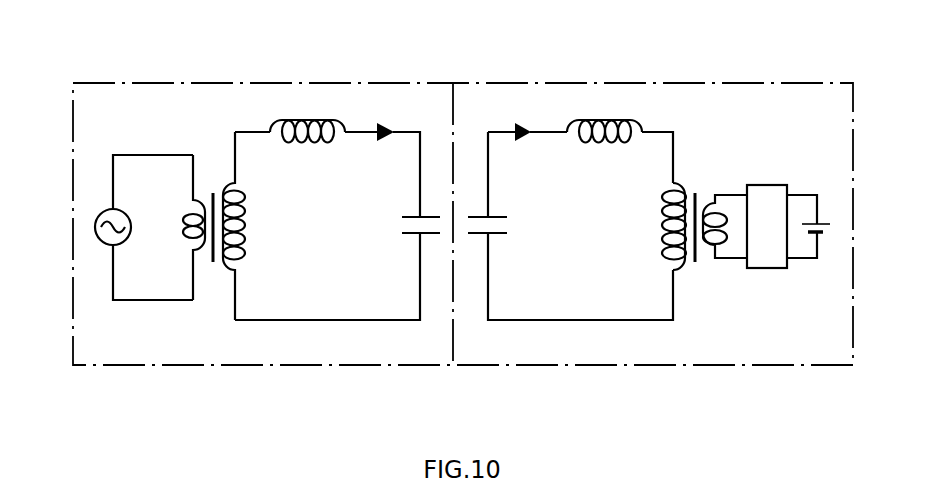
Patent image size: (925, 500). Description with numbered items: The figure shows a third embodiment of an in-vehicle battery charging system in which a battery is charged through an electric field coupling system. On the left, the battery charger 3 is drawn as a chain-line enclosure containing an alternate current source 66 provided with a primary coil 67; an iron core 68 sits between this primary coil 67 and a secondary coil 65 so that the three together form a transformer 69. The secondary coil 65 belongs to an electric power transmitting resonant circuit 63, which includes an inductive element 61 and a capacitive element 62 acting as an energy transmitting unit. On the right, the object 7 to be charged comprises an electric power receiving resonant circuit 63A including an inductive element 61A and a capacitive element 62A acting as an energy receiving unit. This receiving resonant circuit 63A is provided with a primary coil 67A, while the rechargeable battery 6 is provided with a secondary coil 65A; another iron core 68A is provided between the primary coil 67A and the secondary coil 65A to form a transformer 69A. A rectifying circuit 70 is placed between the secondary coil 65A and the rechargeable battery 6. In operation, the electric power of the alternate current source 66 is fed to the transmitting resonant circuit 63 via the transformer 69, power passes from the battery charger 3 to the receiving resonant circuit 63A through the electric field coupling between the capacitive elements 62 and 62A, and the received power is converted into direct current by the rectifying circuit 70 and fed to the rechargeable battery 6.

The battery charger 3 is at (130, 365).
The object to be charged 7 is at (632, 83).
The rechargeable battery 6 is at (832, 225).
The alternate current source 66 is at (100, 214).
The primary coil 67 is at (188, 212).
The iron core 68 is at (212, 196).
The transformer 69 is at (209, 290).
The secondary coil 65 is at (240, 225).
The electric power transmitting resonant circuit 63 is at (358, 101).
The inductive element 61 is at (307, 145).
The capacitive element 62 is at (402, 228).
The capacitive element 62A is at (503, 228).
The electric power receiving resonant circuit 63A is at (503, 104).
The inductive element 61A is at (602, 145).
The primary coil 67A is at (662, 228).
The iron core 68A is at (698, 205).
The transformer 69A is at (692, 292).
The secondary coil 65A is at (727, 235).
The rectifying circuit 70 is at (767, 253).